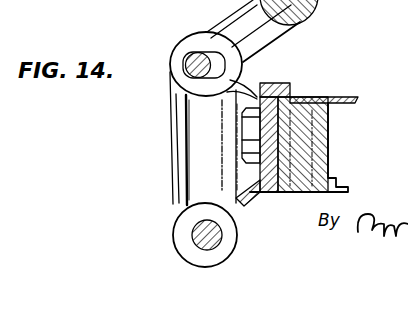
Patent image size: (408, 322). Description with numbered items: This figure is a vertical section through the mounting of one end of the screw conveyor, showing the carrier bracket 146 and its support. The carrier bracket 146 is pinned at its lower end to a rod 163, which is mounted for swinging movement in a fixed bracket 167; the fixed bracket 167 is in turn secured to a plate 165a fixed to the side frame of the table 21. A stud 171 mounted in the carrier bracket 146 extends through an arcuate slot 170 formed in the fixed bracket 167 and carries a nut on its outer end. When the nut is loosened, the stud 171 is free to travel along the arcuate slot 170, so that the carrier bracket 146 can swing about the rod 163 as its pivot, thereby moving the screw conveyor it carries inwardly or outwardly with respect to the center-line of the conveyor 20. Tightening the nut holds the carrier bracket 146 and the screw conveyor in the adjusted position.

The conveyor 20 is at (358, 101).
The table 21 is at (306, 91).
The carrier bracket 146 is at (169, 106).
The rod 163 is at (192, 231).
The plate 165a is at (247, 74).
The fixed bracket 167 is at (202, 123).
The arcuate slot 170 is at (186, 57).
The stud 171 is at (172, 57).